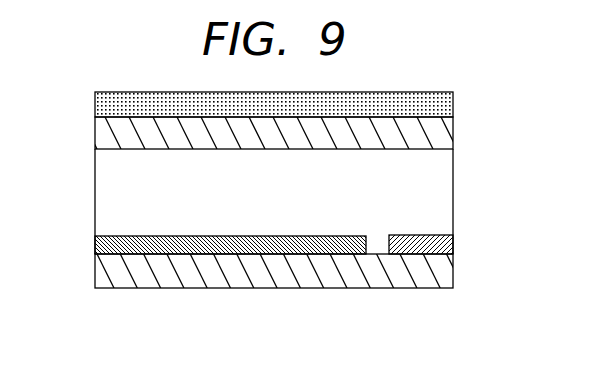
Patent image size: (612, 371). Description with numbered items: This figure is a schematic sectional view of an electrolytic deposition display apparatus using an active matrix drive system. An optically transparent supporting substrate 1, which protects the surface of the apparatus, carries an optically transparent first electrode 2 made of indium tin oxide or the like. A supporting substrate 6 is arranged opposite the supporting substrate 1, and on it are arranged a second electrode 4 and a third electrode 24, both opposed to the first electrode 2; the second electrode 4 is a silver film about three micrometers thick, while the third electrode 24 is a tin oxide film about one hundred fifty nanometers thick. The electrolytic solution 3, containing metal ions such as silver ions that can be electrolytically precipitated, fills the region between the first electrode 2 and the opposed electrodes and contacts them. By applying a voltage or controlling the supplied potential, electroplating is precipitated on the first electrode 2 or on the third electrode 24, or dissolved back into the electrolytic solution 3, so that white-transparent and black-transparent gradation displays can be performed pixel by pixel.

The supporting substrate 1 is at (102, 105).
The first electrode 2 is at (102, 132).
The electrolytic solution 3 is at (101, 190).
The third electrode 24 is at (102, 246).
The second electrode 4 is at (455, 246).
The supporting substrate 6 is at (102, 270).